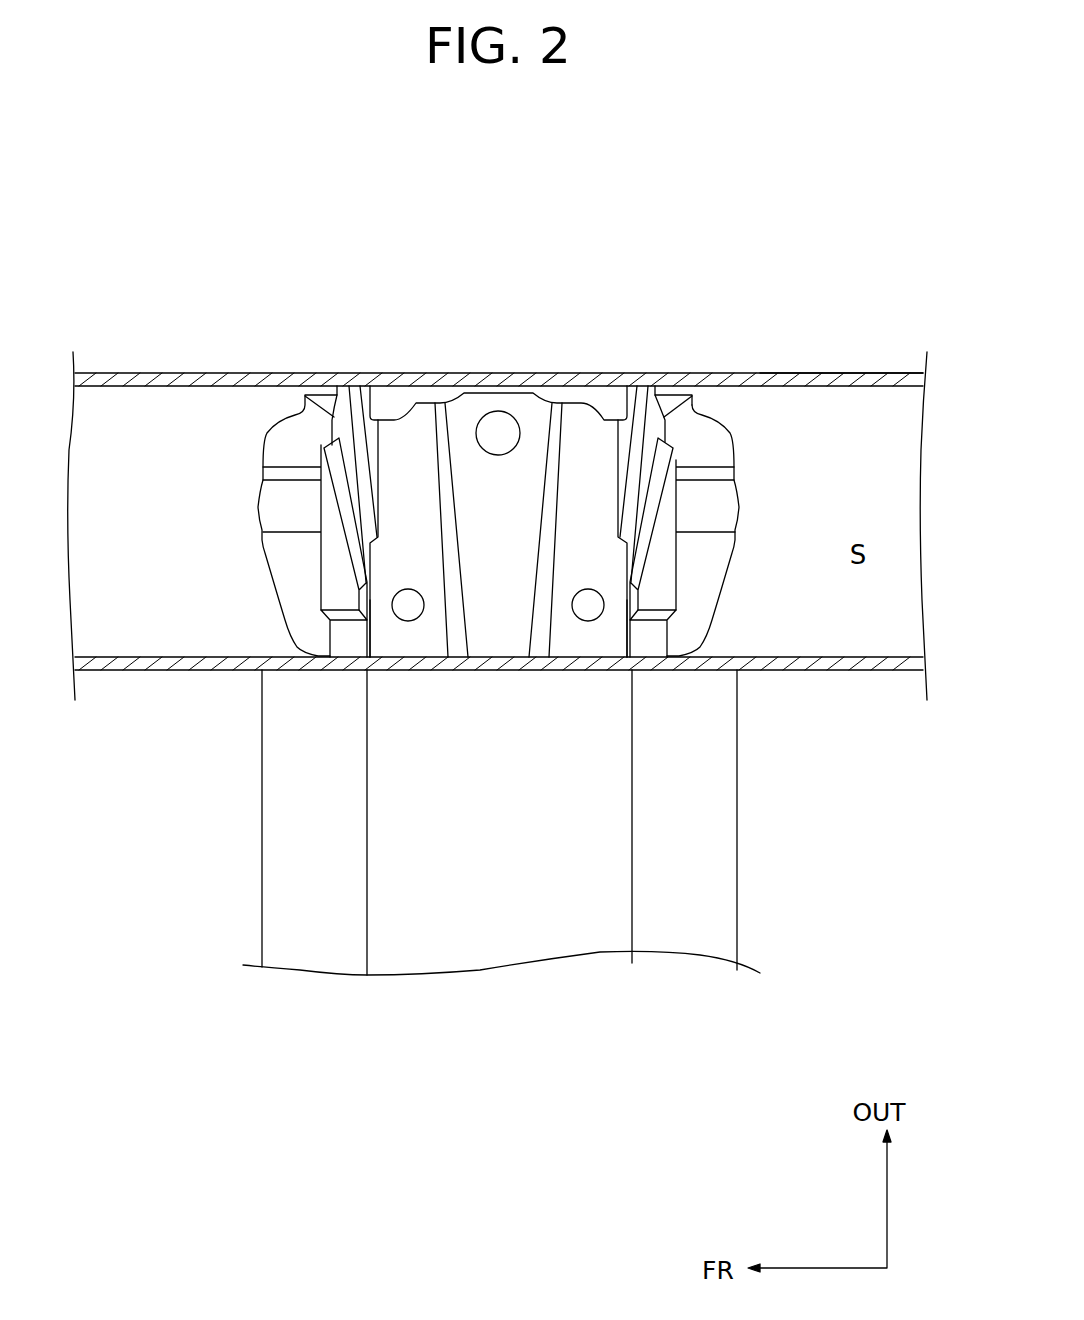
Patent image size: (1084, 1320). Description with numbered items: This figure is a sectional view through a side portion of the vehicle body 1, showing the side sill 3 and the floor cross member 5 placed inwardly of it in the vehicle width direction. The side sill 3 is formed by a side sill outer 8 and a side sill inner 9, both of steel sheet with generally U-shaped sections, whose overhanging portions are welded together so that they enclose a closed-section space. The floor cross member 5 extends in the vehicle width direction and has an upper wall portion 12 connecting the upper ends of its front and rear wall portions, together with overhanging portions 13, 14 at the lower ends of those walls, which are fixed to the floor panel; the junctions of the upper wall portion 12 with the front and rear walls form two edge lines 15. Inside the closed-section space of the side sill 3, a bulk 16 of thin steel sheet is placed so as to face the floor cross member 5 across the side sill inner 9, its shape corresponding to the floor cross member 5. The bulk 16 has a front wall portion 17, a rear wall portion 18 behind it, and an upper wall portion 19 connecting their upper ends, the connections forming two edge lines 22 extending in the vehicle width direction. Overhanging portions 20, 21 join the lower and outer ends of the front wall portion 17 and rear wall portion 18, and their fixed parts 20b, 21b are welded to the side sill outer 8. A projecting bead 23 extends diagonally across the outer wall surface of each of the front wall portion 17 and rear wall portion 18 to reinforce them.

The vehicle body 1 is at (644, 258).
The side sill 3 is at (227, 368).
The floor cross member 5 is at (472, 873).
The side sill outer 8 is at (812, 379).
The side sill inner 9 is at (818, 670).
The upper wall portion 12 is at (493, 930).
The overhanging portion 13 is at (318, 945).
The overhanging portion 14 is at (688, 922).
The edge lines 15 is at (367, 927).
The bulk 16 is at (700, 414).
The front wall portion 17 is at (345, 640).
The rear wall portion 18 is at (650, 640).
The upper wall portion 19 is at (503, 628).
The overhanging portion 20 is at (293, 590).
The fixed part 20b is at (278, 510).
The overhanging portion 21 is at (705, 583).
The fixed part 21b is at (722, 512).
The edge lines 22 is at (387, 650).
The bead 23 is at (353, 478).